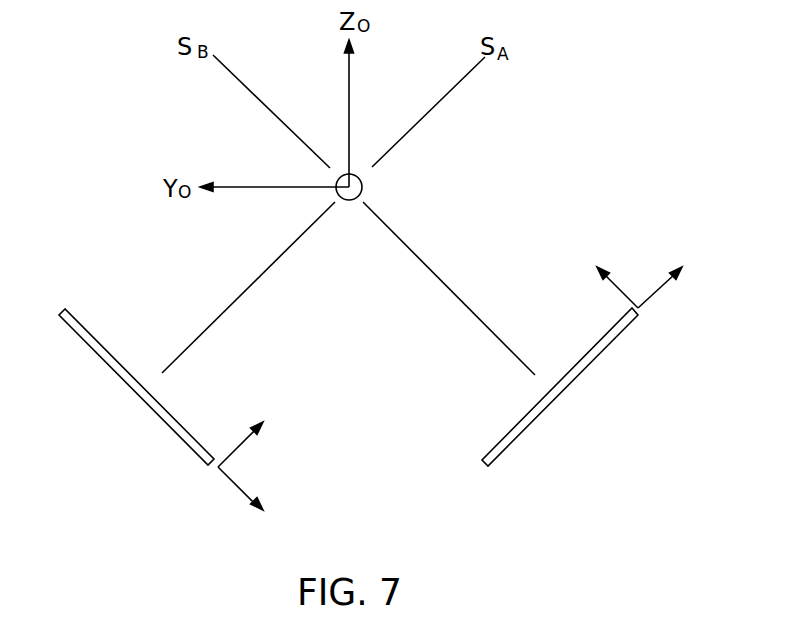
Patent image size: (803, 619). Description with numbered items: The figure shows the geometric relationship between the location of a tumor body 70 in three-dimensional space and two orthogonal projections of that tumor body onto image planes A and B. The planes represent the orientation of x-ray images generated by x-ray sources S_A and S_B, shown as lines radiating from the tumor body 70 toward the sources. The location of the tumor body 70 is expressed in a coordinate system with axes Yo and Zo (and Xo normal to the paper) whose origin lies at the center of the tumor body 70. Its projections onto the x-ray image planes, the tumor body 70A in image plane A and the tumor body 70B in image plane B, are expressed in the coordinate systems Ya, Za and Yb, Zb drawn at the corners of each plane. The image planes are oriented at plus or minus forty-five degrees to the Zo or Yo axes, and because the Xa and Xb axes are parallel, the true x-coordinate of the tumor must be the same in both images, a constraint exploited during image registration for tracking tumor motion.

The tumor body 70 is at (362, 189).
The projection of tumor body in image plane A 70A is at (108, 353).
The projection of tumor body in image plane B 70B is at (581, 360).